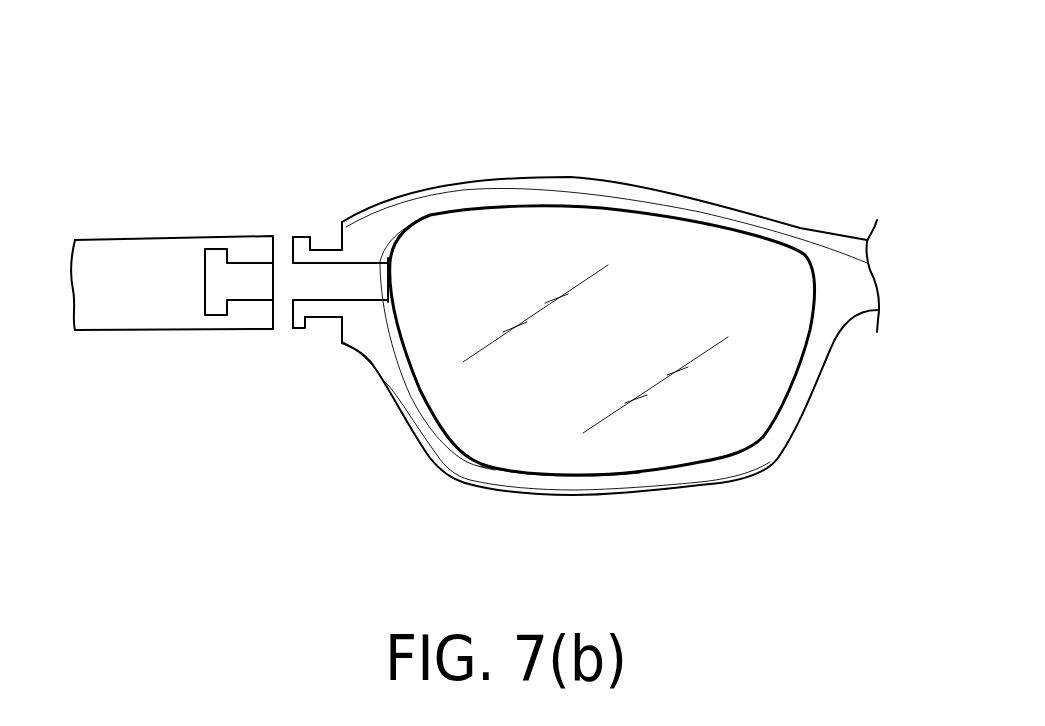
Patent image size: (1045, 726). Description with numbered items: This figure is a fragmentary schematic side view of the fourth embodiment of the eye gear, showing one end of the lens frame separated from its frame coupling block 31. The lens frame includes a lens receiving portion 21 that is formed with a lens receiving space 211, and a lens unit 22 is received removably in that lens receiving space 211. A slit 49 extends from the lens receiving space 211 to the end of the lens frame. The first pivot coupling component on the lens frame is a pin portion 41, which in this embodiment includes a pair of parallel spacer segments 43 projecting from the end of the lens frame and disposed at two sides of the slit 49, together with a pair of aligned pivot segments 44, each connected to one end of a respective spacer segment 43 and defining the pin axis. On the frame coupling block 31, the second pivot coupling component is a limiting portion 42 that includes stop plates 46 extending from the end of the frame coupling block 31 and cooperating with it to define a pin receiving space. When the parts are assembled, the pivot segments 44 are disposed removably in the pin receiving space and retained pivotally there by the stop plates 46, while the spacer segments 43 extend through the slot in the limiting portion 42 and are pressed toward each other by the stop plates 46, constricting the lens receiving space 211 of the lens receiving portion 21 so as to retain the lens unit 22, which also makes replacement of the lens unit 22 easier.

The lens receiving portion 21 is at (650, 188).
The lens unit 22 is at (673, 457).
The lens receiving space 211 is at (548, 470).
The frame coupling block 31 is at (113, 247).
The pin portion 41 is at (363, 253).
The limiting portion 42 is at (172, 303).
The spacer segment 43 is at (325, 258).
The pivot segment 44 is at (302, 237).
The stop plate 46 is at (253, 237).
The slit 49 is at (368, 267).